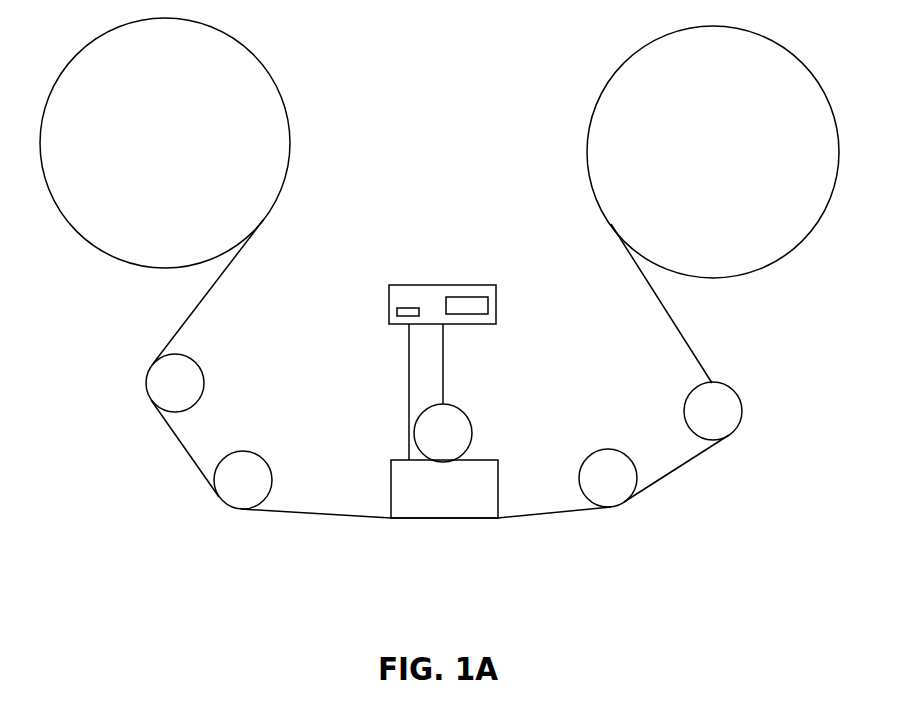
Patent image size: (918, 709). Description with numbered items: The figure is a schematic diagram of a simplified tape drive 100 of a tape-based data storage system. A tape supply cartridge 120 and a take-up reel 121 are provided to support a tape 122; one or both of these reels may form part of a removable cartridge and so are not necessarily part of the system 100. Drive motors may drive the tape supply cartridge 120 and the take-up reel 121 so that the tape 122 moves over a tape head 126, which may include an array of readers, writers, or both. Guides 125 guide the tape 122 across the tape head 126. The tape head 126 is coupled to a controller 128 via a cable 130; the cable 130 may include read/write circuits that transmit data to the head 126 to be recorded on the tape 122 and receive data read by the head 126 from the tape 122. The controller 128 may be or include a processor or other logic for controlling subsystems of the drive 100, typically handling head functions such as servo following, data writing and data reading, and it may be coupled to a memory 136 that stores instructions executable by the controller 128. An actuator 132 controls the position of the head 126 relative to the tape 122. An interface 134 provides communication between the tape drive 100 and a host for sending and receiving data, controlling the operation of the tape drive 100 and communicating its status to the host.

The tape drive 100 is at (126, 316).
The tape supply cartridge 120 is at (287, 121).
The take-up reel 121 is at (790, 250).
The tape 122 is at (326, 514).
The guides 125 is at (243, 451).
The tape head 126 is at (498, 488).
The controller 128 is at (441, 285).
The cable 130 is at (406, 432).
The actuator 132 is at (463, 412).
The interface 134 is at (476, 297).
The memory 136 is at (406, 307).